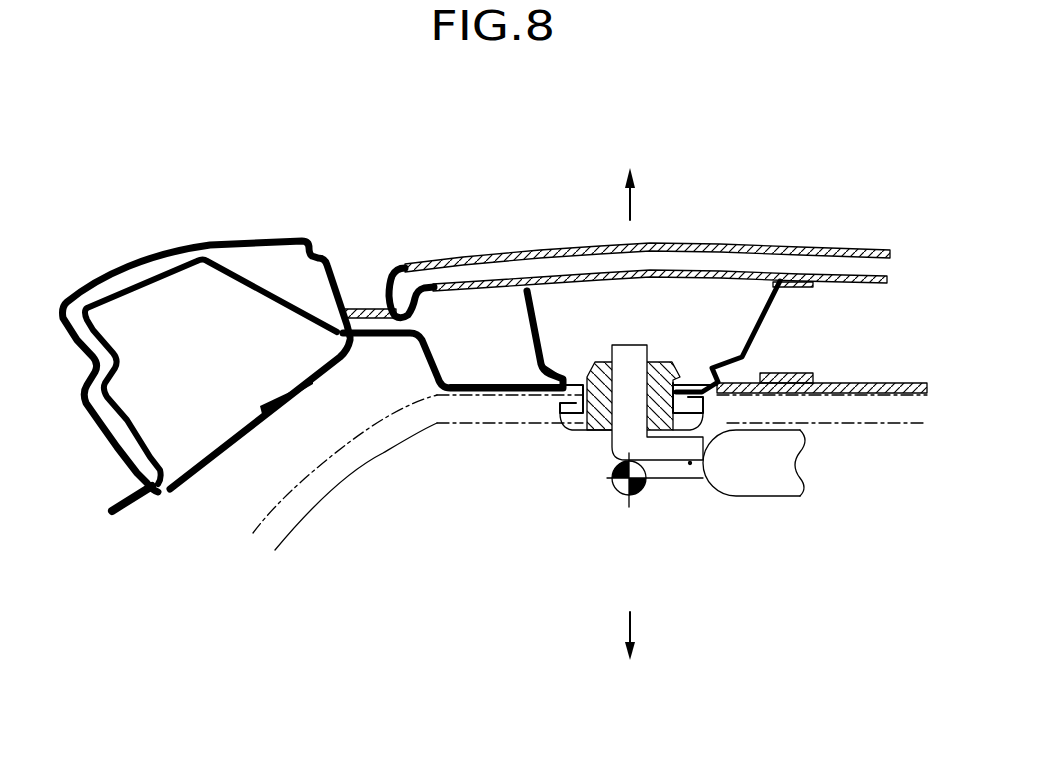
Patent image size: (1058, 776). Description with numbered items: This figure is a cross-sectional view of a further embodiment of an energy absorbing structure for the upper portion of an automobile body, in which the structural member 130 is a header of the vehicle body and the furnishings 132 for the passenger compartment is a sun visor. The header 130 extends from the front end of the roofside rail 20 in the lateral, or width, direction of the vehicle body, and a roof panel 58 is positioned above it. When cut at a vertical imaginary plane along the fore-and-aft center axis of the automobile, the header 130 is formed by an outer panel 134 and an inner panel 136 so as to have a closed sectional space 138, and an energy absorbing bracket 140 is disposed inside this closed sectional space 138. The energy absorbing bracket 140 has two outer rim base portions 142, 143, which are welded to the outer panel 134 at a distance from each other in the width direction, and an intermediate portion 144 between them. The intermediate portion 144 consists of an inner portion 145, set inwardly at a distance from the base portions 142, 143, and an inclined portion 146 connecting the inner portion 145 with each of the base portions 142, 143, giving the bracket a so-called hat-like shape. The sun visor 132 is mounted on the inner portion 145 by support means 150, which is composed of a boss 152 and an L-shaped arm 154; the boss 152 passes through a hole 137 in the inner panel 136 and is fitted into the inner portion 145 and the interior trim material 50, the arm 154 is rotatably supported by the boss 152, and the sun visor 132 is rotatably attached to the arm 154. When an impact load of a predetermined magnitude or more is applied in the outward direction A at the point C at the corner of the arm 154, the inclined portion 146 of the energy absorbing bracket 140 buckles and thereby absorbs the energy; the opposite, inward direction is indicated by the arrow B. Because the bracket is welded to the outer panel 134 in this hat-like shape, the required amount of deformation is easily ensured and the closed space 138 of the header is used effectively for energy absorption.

The roofside rail 20 is at (253, 237).
The interior trim material 50 is at (925, 385).
The roof panel 58 is at (687, 242).
The structural member (header) 130 is at (547, 277).
The furnishings (sun visor) 132 is at (712, 490).
The outer panel 134 is at (713, 268).
The inner panel 136 is at (483, 395).
The hole 137 is at (560, 400).
The closed sectional space 138 is at (597, 290).
The energy absorbing bracket 140 is at (527, 333).
The base portion 142 is at (487, 283).
The base portion 143 is at (800, 277).
The intermediate portion 144 is at (820, 395).
The inner portion 145 is at (703, 410).
The inclined portion 146 is at (760, 335).
The support means 150 is at (612, 447).
The boss 152 is at (583, 432).
The L-shaped arm 154 is at (685, 465).
The outward direction A is at (633, 208).
The direction B is at (633, 626).
The point C is at (630, 507).